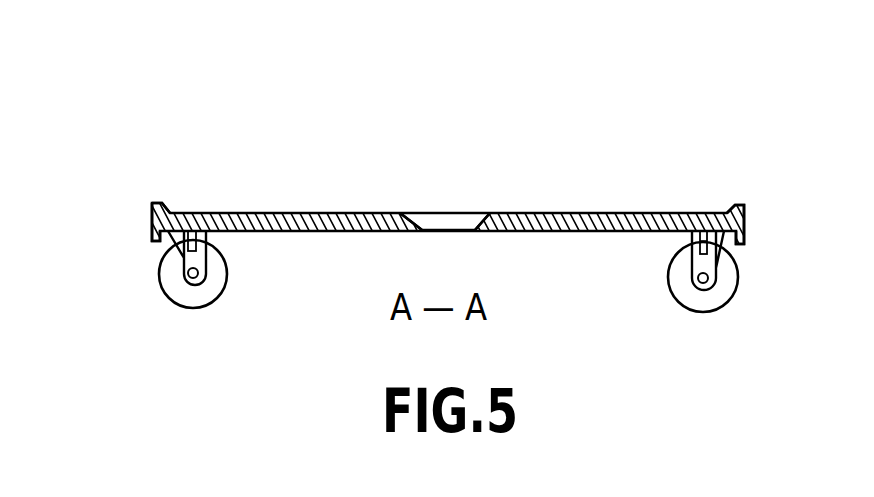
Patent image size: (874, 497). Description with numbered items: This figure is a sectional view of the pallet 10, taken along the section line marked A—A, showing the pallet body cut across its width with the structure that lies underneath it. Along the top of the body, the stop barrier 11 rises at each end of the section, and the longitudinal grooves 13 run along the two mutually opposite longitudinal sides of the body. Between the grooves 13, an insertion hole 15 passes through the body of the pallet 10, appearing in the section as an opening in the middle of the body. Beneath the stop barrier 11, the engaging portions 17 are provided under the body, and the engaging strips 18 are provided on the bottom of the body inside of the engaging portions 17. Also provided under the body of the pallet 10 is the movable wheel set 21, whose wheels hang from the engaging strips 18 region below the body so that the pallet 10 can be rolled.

The pallet 10 is at (293, 148).
The stop barrier 11 is at (155, 205).
The longitudinal groove 13 is at (712, 216).
The insertion hole 15 is at (447, 218).
The engaging portion 17 is at (744, 238).
The engaging strip 18 is at (212, 250).
The movable wheel set 21 is at (170, 293).